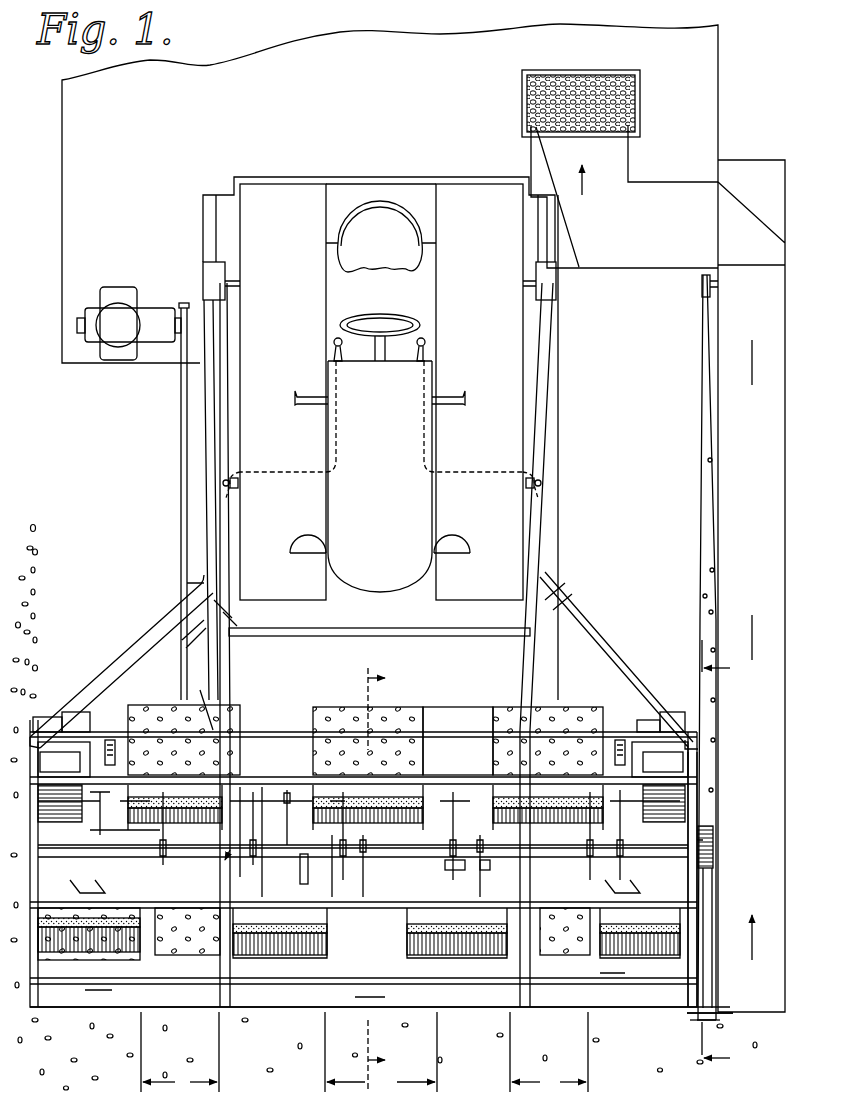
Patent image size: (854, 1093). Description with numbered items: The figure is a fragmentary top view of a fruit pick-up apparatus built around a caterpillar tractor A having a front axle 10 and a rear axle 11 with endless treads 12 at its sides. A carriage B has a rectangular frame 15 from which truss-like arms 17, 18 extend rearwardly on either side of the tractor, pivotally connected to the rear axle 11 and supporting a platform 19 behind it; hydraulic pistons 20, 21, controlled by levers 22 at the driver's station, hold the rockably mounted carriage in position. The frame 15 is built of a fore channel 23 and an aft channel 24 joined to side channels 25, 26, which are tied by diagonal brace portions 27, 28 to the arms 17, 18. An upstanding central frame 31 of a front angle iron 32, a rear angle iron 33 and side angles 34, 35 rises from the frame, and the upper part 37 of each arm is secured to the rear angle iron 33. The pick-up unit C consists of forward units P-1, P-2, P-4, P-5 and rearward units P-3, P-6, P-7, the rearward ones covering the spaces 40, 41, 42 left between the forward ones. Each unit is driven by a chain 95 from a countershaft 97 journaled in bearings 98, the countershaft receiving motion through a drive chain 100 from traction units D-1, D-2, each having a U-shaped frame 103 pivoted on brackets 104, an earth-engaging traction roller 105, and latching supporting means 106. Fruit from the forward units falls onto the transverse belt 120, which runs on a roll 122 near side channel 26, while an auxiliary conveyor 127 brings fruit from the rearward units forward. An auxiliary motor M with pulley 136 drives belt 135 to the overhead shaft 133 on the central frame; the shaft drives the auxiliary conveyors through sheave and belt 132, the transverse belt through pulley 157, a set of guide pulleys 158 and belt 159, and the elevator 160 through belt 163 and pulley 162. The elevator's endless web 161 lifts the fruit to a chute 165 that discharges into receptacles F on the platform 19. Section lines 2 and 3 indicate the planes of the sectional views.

The front axle 10 is at (239, 482).
The rear axle 11 is at (236, 272).
The endless treads 12 is at (290, 437).
The frame 15 is at (32, 957).
The truss-like arm 17 is at (208, 452).
The truss-like arm 18 is at (554, 488).
The platform 19 is at (345, 115).
The piston 20 is at (240, 505).
The piston 21 is at (528, 518).
The levers 22 is at (333, 341).
The fore channel 23 is at (538, 1008).
The aft channel 24 is at (446, 738).
The side channel 25 is at (34, 925).
The side channel 26 is at (690, 762).
The diagonal brace portion 27 is at (118, 660).
The diagonal brace portion 28 is at (612, 655).
The central frame 31 is at (34, 872).
The front angle iron 32 is at (565, 931).
The rear angle iron 33 is at (462, 786).
The side angle 34 is at (33, 838).
The side angle 35 is at (692, 808).
The upper part of truss-like arm 37 is at (226, 672).
The space 40 is at (381, 1052).
The space 41 is at (180, 1052).
The space 42 is at (549, 1052).
The chain 95 is at (226, 835).
The countershaft 97 is at (484, 870).
The bearings 98 is at (226, 865).
The drive chain 100 is at (104, 800).
The U-shaped frame 103 is at (40, 712).
The brackets 104 is at (367, 882).
The traction roller 105 is at (361, 762).
The supporting means 106 is at (100, 748).
The belt 120 is at (308, 1008).
The roll 122 is at (692, 1035).
The auxiliary conveyor 127 is at (170, 942).
The sheave and belt 132 is at (308, 871).
The overhead shaft 133 is at (448, 864).
The belt 135 is at (181, 578).
The pulley 136 is at (184, 304).
The pulley 157 is at (714, 848).
The pulleys 158 is at (698, 1022).
The belt 159 is at (718, 912).
The elevator structure 160 is at (752, 158).
The endless web 161 is at (760, 461).
The pulley 162 is at (700, 294).
The belt 163 is at (703, 420).
The chute 165 is at (672, 222).
The section line 2- 2 is at (717, 855).
The section line 3- 3 is at (385, 870).
The tractor A is at (386, 466).
The carriage B is at (530, 668).
The pick-up unit C is at (256, 690).
The conveyor means E is at (735, 523).
The receptacles F is at (642, 98).
The auxiliary motor M is at (124, 333).
The earth engaging unit D-1 is at (42, 762).
The earth engaging unit D-2 is at (675, 767).
The pick-up unit P-1 is at (287, 965).
The pick-up unit P-2 is at (438, 967).
The pick-up unit P-3 is at (348, 704).
The pick-up unit P-4 is at (72, 960).
The pick-up unit P-5 is at (608, 966).
The pick-up unit P-6 is at (162, 702).
The pick-up unit P-7 is at (574, 704).